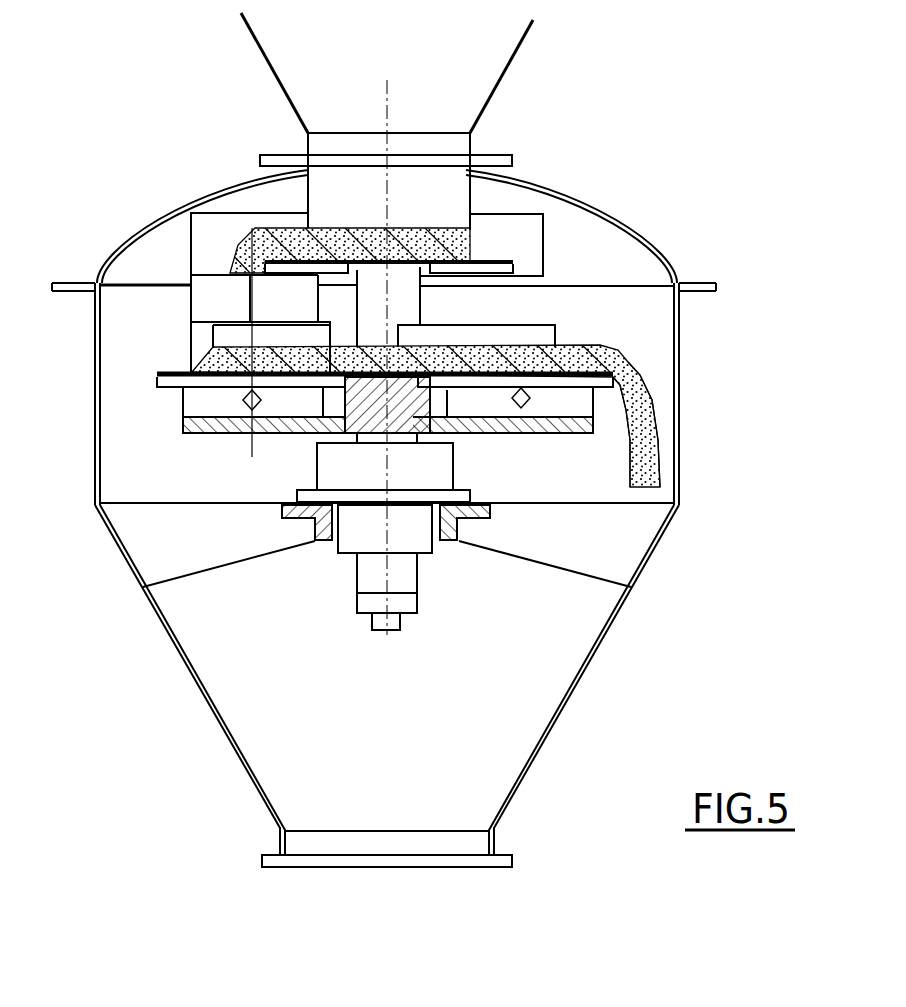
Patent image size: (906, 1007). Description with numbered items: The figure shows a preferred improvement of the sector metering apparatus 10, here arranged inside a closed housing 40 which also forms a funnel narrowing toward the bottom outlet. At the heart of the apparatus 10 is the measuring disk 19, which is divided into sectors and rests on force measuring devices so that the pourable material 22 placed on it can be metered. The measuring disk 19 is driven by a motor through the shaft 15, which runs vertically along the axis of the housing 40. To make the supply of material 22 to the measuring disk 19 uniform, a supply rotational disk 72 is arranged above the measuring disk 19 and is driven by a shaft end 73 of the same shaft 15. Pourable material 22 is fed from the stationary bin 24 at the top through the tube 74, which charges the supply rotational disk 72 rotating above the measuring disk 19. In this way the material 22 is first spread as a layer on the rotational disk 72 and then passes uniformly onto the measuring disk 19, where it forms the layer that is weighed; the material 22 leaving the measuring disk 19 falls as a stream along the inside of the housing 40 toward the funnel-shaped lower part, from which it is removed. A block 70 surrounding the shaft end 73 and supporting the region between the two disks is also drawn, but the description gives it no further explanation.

The sector metering apparatus 10 is at (643, 354).
The shaft 15 is at (380, 420).
The measuring disk 19 is at (173, 373).
The pourable material 22 is at (641, 447).
The stationary bin 24 is at (482, 96).
The closed housing 40 is at (118, 243).
The housing block 70 is at (555, 217).
The supply rotational disk 72 is at (513, 262).
The shaft end 73 is at (481, 307).
The tube 74 is at (452, 197).